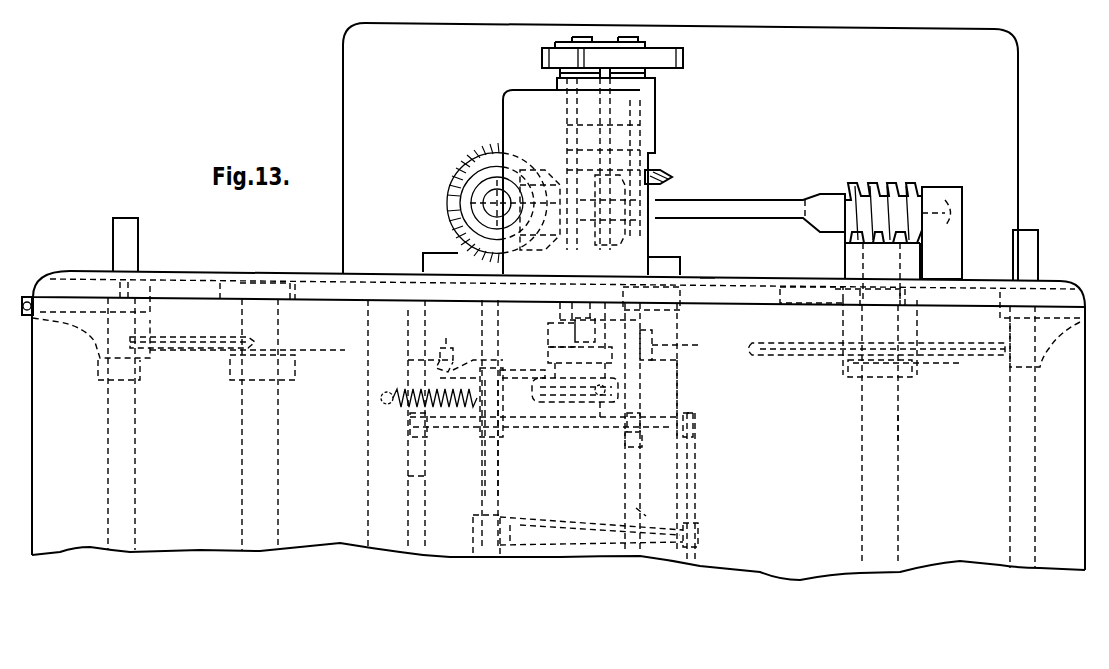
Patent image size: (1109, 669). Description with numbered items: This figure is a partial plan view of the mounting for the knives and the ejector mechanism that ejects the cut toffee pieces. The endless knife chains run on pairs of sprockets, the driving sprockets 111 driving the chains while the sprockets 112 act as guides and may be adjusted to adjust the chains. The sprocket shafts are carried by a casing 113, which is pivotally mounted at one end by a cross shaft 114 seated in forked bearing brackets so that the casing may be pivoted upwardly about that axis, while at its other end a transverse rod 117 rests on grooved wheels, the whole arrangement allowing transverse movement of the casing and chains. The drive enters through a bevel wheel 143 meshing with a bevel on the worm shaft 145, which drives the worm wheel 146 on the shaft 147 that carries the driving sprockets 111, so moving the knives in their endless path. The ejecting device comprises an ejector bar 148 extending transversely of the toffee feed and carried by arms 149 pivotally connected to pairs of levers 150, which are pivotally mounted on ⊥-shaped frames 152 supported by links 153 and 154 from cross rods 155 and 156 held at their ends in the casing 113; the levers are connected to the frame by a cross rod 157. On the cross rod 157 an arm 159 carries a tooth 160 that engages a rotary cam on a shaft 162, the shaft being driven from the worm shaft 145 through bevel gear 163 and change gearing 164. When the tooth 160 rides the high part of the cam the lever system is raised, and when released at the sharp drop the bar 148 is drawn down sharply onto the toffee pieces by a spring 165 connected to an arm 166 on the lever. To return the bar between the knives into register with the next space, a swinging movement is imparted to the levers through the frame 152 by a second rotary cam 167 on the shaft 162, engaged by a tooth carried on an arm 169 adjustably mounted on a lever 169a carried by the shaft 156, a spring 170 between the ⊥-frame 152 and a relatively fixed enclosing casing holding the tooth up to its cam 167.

The driving sprockets 111 is at (963, 348).
The guide sprockets 112 is at (187, 352).
The casing 113 is at (698, 290).
The cross shaft 114 is at (1030, 257).
The transverse rod 117 is at (133, 262).
The bevel wheel 143 is at (448, 190).
The worm shaft 145 is at (760, 212).
The worm wheel 146 is at (820, 198).
The shaft 147 is at (898, 432).
The ejector bar 148 is at (695, 445).
The arms 149 is at (697, 523).
The levers 150 is at (585, 530).
The ⊥-shaped frame 152 is at (580, 433).
The link 153 is at (407, 433).
The link 154 is at (640, 440).
The cross rod 155 is at (410, 482).
The cross rod 156 is at (638, 510).
The cross rod 157 is at (495, 480).
The arm 159 is at (514, 417).
The tooth 160 is at (680, 395).
The shaft 162 is at (562, 356).
The bevel gear 163 is at (680, 177).
The change gearing 164 is at (542, 55).
The spring 165 is at (438, 341).
The arm 166 is at (468, 362).
The rotary cam 167 is at (558, 326).
The arm 169 is at (660, 330).
The lever 169a is at (699, 398).
The spring 170 is at (441, 439).